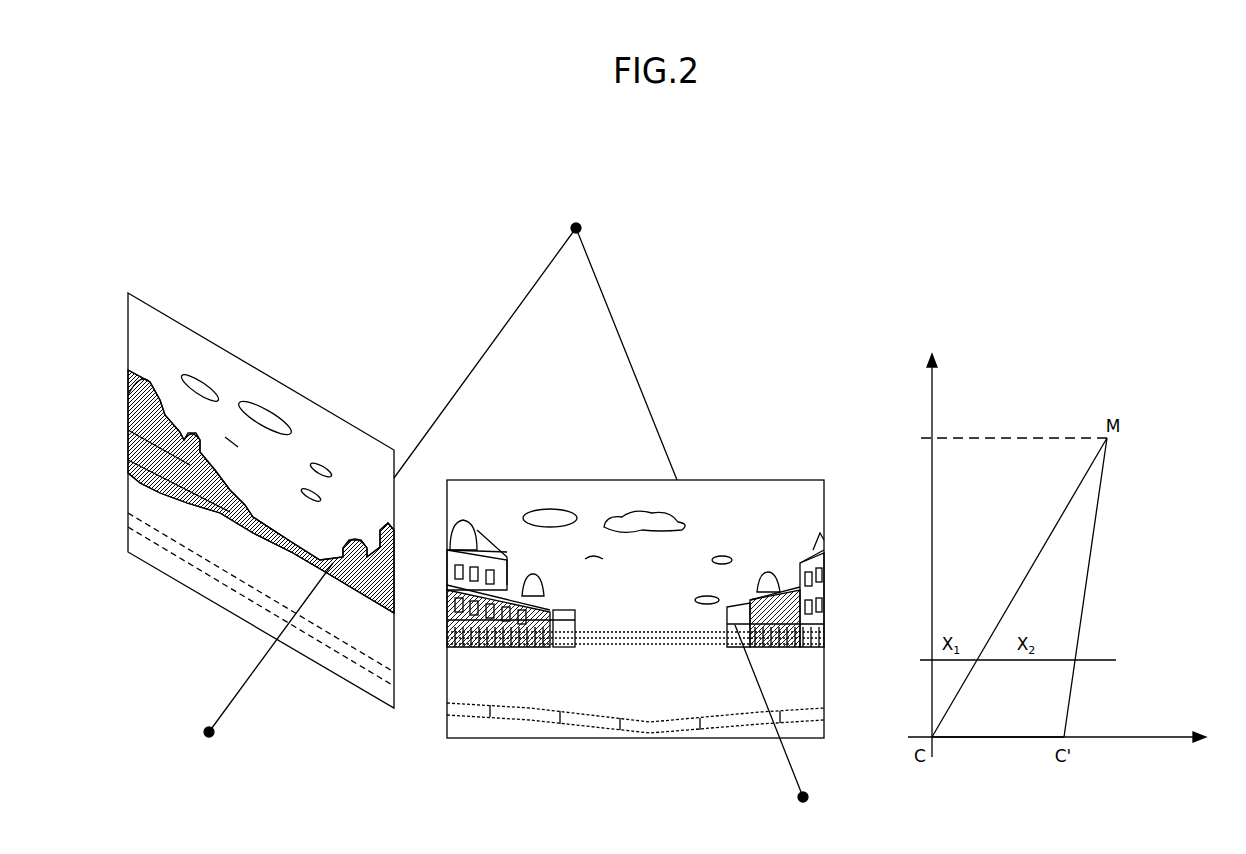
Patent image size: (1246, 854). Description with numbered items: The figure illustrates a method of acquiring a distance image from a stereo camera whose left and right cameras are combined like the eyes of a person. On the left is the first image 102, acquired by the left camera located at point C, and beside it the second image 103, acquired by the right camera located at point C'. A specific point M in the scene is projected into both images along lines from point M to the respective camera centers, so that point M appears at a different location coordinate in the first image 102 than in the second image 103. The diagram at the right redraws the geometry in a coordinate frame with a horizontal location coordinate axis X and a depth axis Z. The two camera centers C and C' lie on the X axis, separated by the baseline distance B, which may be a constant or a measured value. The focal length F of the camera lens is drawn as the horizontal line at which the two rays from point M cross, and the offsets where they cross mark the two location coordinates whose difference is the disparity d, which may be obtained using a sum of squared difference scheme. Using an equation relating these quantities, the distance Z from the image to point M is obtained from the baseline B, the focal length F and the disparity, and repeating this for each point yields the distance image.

The first image 102 is at (183, 322).
The second image 103 is at (755, 480).
The specific point M is at (535, 337).
The point C (left camera location) C is at (261, 666).
The point C' (right camera location) C' is at (778, 732).
The distance z Z is at (1004, 544).
The location coordinate axis X is at (1066, 738).
The focal length F is at (1010, 660).
The distance between point C and point C' B is at (998, 726).